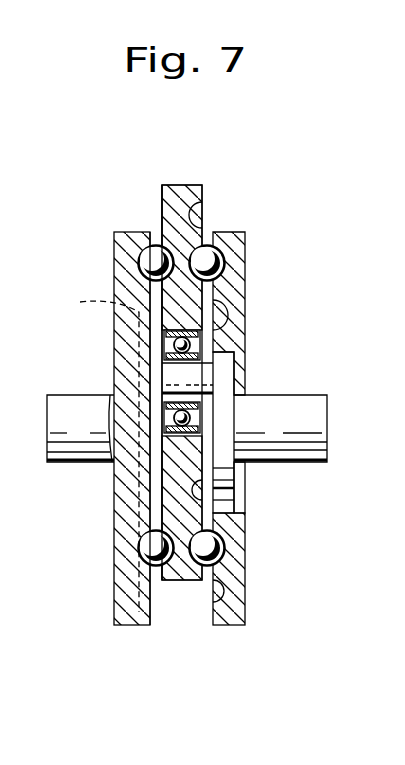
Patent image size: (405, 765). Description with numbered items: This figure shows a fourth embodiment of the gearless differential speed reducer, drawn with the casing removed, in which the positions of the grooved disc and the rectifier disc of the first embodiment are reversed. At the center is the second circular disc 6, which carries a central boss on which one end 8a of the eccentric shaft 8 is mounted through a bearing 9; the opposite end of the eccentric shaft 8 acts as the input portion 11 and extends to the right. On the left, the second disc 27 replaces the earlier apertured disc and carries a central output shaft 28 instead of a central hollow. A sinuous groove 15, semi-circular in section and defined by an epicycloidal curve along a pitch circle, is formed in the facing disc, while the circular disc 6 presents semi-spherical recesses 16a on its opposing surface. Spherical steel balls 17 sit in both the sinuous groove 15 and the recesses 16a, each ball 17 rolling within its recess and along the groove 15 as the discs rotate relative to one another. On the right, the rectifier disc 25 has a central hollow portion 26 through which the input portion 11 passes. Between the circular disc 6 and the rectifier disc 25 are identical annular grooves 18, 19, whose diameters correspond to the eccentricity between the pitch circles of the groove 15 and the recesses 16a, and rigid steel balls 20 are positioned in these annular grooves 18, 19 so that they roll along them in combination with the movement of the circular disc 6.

The second circular disc 6 is at (175, 190).
The eccentric shaft 8 is at (271, 437).
The end of eccentric shaft 8a is at (198, 376).
The bearing 9 is at (216, 343).
The input portion 11 is at (308, 423).
The sinuous groove 15 is at (93, 449).
The semi-spherical recesses 16a is at (157, 562).
The spherical balls 17 is at (157, 244).
The annular grooves 18 is at (212, 208).
The annular grooves 19 is at (225, 595).
The rigid steel balls 20 is at (247, 248).
The rectifier disc 25 is at (228, 231).
The central hollow portion 26 is at (247, 350).
The second disc 27 is at (118, 258).
The central output shaft 28 is at (75, 440).